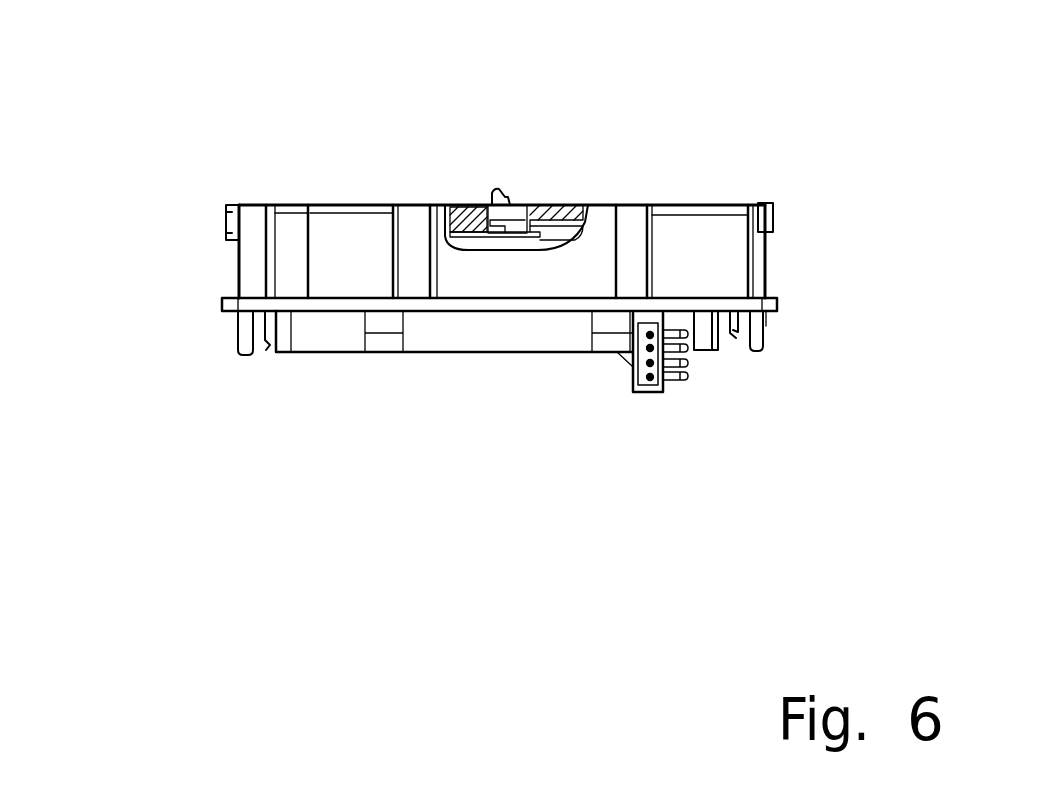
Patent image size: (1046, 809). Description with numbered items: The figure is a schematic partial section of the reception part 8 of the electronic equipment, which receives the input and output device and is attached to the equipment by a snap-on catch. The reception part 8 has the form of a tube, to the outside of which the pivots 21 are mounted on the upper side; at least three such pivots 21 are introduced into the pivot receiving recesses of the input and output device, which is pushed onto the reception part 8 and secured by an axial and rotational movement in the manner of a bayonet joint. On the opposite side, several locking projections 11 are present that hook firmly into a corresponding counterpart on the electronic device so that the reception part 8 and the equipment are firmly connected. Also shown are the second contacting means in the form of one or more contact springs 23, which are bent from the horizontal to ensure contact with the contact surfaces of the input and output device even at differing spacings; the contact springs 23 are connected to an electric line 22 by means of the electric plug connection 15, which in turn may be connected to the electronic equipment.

The reception part 8 is at (797, 304).
The locking projections 11 is at (268, 355).
The electric plug connection 15 is at (632, 395).
The pivots 21 is at (225, 223).
The electric line 22 is at (558, 205).
The contact springs 23 is at (507, 192).